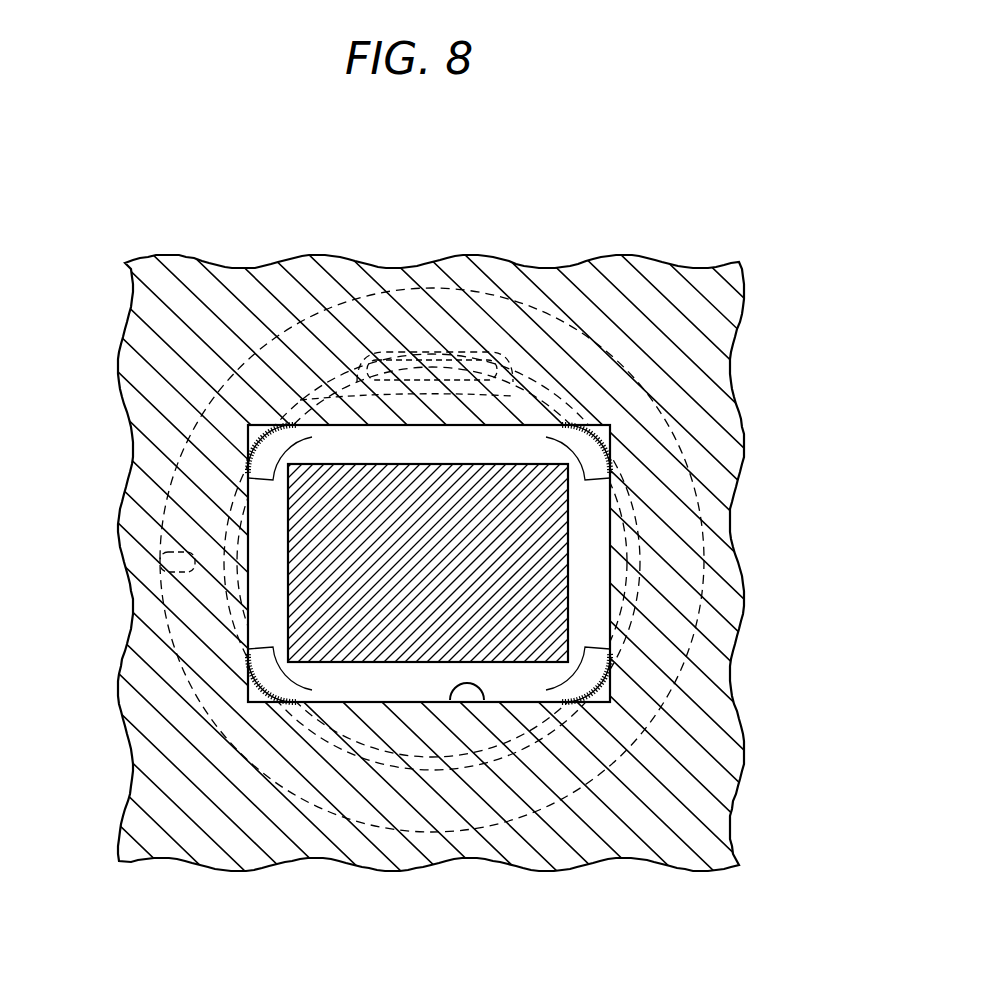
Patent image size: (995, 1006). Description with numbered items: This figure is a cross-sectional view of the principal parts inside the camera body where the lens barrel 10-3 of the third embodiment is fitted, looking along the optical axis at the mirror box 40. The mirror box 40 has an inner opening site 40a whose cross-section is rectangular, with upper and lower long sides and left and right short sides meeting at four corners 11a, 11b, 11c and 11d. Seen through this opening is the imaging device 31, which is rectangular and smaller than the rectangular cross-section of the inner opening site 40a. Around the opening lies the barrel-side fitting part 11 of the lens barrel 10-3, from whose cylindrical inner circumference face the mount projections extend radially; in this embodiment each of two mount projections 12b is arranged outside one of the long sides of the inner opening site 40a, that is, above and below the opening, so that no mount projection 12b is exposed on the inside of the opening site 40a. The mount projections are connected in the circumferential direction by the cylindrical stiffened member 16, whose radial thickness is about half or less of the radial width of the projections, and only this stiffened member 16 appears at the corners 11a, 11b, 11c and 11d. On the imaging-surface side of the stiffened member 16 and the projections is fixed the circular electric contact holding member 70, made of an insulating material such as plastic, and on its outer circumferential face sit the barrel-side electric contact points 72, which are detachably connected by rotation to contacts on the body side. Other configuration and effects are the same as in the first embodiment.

The mirror box 40 is at (230, 308).
The inner opening site 40a is at (483, 700).
The lens barrel 10-3 is at (668, 420).
The barrel-side fitting part 11 is at (700, 545).
The corner 11a is at (250, 447).
The corner 11b is at (250, 680).
The corner 11c is at (607, 666).
The corner 11d is at (608, 440).
The mount projection 12b is at (550, 387).
The cylindrical stiffened member 16 is at (227, 597).
The imaging device 31 is at (535, 527).
The electric contact holding member 70 is at (360, 345).
The barrel-side electric contact point 72 is at (493, 357).